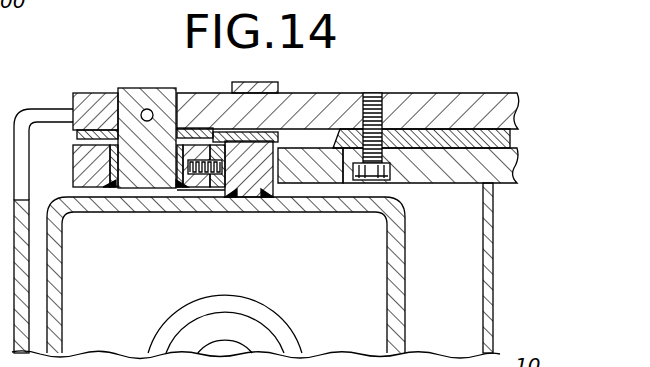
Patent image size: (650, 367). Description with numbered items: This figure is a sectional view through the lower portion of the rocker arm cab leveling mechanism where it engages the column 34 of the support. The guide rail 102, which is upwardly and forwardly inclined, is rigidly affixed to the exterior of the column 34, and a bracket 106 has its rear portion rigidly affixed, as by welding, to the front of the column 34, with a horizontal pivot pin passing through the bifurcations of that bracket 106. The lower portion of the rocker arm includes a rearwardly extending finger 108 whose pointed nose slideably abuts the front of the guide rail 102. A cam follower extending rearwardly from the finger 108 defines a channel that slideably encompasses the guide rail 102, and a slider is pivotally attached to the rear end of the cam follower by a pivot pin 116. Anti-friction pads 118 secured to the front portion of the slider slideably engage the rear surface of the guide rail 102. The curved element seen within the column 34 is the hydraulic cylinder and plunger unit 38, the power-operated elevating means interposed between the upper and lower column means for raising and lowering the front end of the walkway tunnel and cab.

The column 34 is at (65, 290).
The hydraulic cylinder and plunger unit 38 is at (253, 332).
The guide rail 102 is at (264, 163).
The bracket 106 is at (430, 98).
The finger 108 is at (506, 170).
The pivot pin 116 is at (160, 97).
The anti-friction pads 118 is at (215, 193).